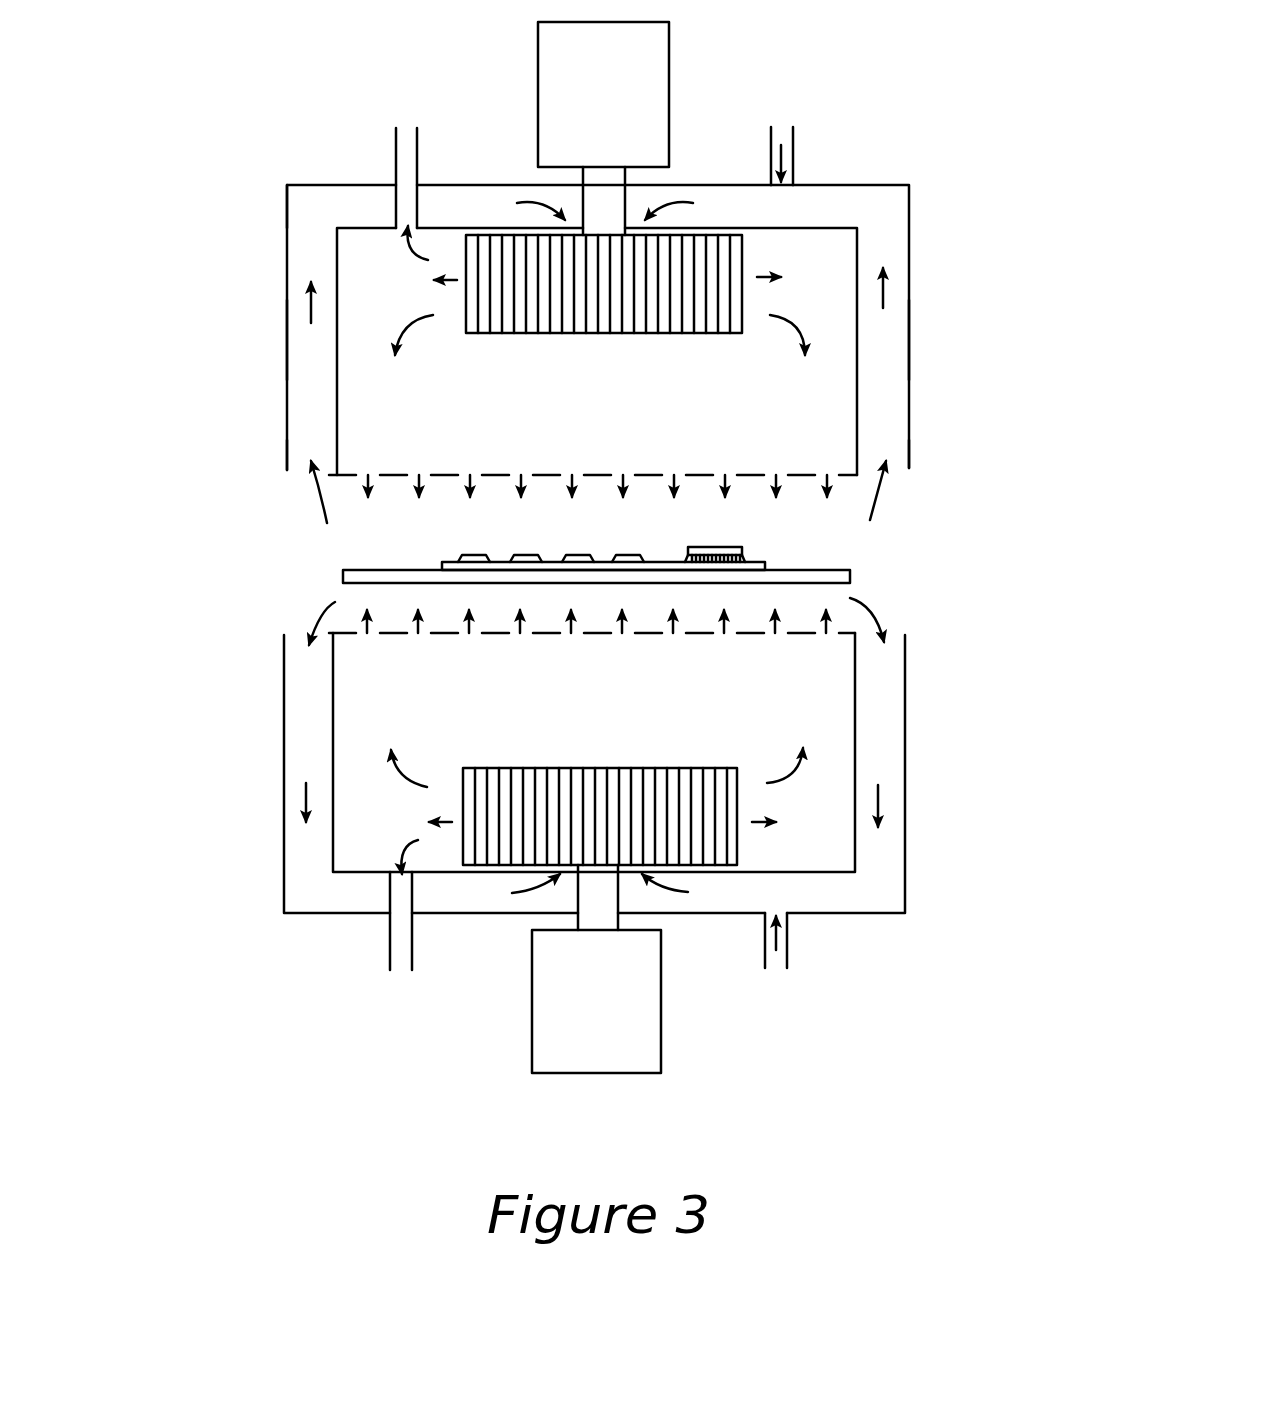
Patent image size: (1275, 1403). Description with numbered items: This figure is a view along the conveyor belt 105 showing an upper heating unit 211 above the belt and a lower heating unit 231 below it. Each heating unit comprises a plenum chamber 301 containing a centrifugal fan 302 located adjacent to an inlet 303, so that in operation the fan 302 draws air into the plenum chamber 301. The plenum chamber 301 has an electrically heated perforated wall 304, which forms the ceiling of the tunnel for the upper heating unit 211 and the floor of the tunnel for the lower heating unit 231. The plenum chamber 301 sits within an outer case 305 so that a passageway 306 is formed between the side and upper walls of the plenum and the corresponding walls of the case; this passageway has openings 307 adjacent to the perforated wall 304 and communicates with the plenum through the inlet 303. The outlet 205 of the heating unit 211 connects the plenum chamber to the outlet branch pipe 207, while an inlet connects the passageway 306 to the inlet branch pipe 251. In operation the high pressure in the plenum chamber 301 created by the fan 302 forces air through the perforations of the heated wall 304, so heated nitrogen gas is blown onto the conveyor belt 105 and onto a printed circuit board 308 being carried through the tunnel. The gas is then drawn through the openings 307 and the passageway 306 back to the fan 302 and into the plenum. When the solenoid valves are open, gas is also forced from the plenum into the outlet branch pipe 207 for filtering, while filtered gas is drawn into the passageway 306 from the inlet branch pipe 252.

The conveyor belt 105 is at (850, 578).
The outlet 205 is at (400, 228).
The outlet branch pipe 207 is at (396, 160).
The heating unit 211 is at (928, 313).
The heating unit 231 is at (925, 773).
The inlet branch pipe 251 is at (797, 190).
The inlet branch pipe 252 is at (793, 130).
The plenum chamber 301 is at (631, 438).
The centrifugal fan 302 is at (528, 285).
The inlet 303 is at (640, 228).
The electrically heated perforated wall 304 is at (800, 472).
The outer case 305 is at (909, 250).
The passageway 306 is at (300, 390).
The openings 307 is at (298, 472).
The printed circuit board 308 is at (765, 560).